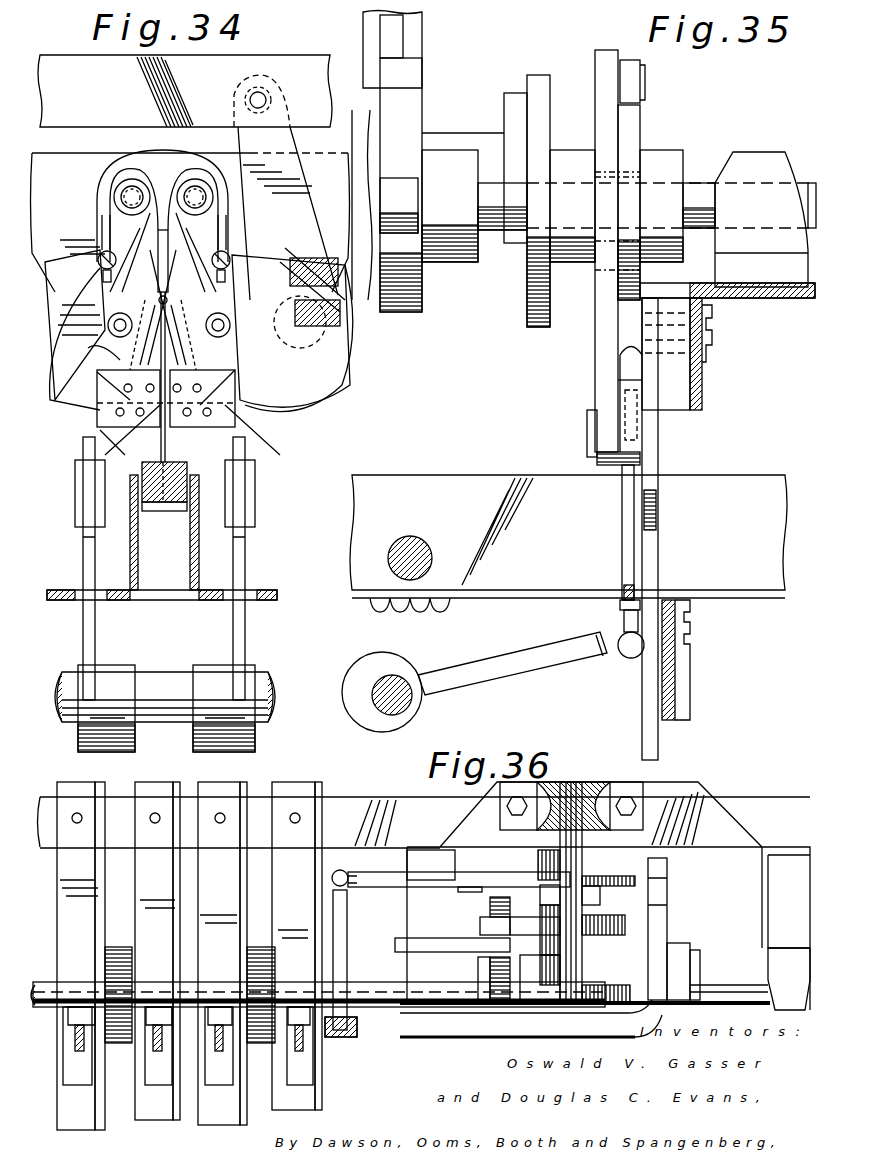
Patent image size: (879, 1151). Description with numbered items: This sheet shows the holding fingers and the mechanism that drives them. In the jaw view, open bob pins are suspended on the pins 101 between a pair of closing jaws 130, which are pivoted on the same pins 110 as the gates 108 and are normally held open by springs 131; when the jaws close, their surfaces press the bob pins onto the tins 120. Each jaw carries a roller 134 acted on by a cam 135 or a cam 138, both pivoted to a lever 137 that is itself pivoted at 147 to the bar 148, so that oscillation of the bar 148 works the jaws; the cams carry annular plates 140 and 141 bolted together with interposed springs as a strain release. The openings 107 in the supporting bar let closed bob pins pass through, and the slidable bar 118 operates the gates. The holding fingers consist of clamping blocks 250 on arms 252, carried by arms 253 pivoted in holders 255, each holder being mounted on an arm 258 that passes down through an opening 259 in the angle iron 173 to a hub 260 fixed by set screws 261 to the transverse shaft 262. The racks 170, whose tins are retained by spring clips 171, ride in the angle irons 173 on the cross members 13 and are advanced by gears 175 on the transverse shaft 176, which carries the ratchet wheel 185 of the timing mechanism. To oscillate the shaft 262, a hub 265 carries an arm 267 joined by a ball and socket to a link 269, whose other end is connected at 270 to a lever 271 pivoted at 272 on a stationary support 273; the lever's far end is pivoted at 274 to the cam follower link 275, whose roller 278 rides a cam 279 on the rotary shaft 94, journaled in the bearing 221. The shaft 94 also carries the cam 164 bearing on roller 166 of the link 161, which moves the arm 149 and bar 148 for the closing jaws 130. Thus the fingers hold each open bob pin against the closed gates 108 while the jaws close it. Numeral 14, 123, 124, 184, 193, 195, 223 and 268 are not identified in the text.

In FIG. 35, the cross members 13 is at (700, 608).
In FIG. 34, the needle 14 is at (167, 306).
In FIG. 35, the shaft 94 is at (695, 182).
In FIG. 36, the shaft 94 is at (582, 840).
In FIG. 34, the pins 101 is at (152, 295).
In FIG. 34, the spaced openings 107 is at (209, 269).
In FIG. 34, the gates 108 is at (241, 412).
In FIG. 34, the pins 110 is at (128, 180).
In FIG. 35, the slidable bar 118 is at (513, 100).
In FIG. 36, the slidable bar 118 is at (460, 952).
In FIG. 34, the tins 120 is at (166, 445).
In FIG. 36, the block 123 is at (480, 922).
In FIG. 35, the gear plate 124 is at (540, 82).
In FIG. 36, the gear plate 124 is at (600, 935).
In FIG. 34, the closing jaws 130 is at (118, 218).
In FIG. 34, the springs 131 is at (160, 152).
In FIG. 34, the roller 134 is at (164, 273).
In FIG. 34, the cam 135 is at (282, 278).
In FIG. 34, the lever 137 is at (291, 146).
In FIG. 34, the cam 138 is at (88, 412).
In FIG. 34, the annular plate 140 is at (272, 446).
In FIG. 34, the annular plate 141 is at (75, 325).
In FIG. 34, the pivot 147 is at (262, 92).
In FIG. 34, the bar 148 is at (228, 58).
In FIG. 35, the arm 149 is at (412, 38).
In FIG. 36, the link 161 is at (434, 1025).
In FIG. 35, the cam 164 is at (414, 82).
In FIG. 36, the cam 164 is at (605, 990).
In FIG. 35, the roller 166 is at (393, 188).
In FIG. 34, the racks 170 is at (183, 470).
In FIG. 34, the spring clips 171 is at (156, 506).
In FIG. 34, the angle irons 173 is at (190, 554).
In FIG. 35, the angle irons 173 is at (735, 490).
In FIG. 36, the angle irons 173 is at (132, 893).
In FIG. 35, the gears 175 is at (420, 608).
In FIG. 36, the gears 175 is at (116, 947).
In FIG. 35, the transverse shaft 176 is at (408, 546).
In FIG. 36, the transverse shaft 176 is at (205, 982).
In FIG. 36, the block 184 is at (786, 980).
In FIG. 36, the ratchet wheel 185 is at (512, 958).
In FIG. 36, the bar 193 is at (660, 884).
In FIG. 36, the block 195 is at (672, 950).
In FIG. 35, the bearing 221 is at (768, 162).
In FIG. 36, the bearing 221 is at (590, 790).
In FIG. 36, the plate 223 is at (455, 866).
In FIG. 34, the clamping blocks 250 is at (108, 325).
In FIG. 34, the arms 252 is at (97, 427).
In FIG. 34, the arms 253 is at (100, 440).
In FIG. 34, the holders 255 is at (75, 506).
In FIG. 34, the arm 258 is at (83, 543).
In FIG. 36, the arm 258 is at (75, 1040).
In FIG. 34, the opening 259 is at (72, 590).
In FIG. 36, the opening 259 is at (70, 1080).
In FIG. 34, the hub 260 is at (115, 686).
In FIG. 34, the set screws 261 is at (135, 732).
In FIG. 34, the transverse shaft 262 is at (168, 685).
In FIG. 35, the transverse shaft 262 is at (402, 678).
In FIG. 36, the transverse shaft 262 is at (45, 1008).
In FIG. 35, the hub 265 is at (366, 660).
In FIG. 36, the hub 265 is at (350, 1037).
In FIG. 35, the arm 267 is at (512, 688).
In FIG. 36, the arm 267 is at (347, 912).
In FIG. 35, the pivot 268 is at (622, 656).
In FIG. 35, the link 269 is at (622, 548).
In FIG. 35, the ball and socket connection 270 is at (618, 346).
In FIG. 36, the ball and socket connection 270 is at (340, 870).
In FIG. 35, the lever 271 is at (618, 380).
In FIG. 36, the lever 271 is at (392, 866).
In FIG. 35, the pivot 272 is at (625, 397).
In FIG. 36, the pivot 272 is at (466, 892).
In FIG. 35, the stationary support 273 is at (658, 456).
In FIG. 35, the pivot 274 is at (587, 435).
In FIG. 35, the cam follower link 275 is at (595, 322).
In FIG. 36, the cam follower link 275 is at (600, 893).
In FIG. 35, the roller 278 is at (640, 74).
In FIG. 36, the roller 278 is at (562, 872).
In FIG. 35, the cam 279 is at (632, 150).
In FIG. 36, the cam 279 is at (632, 876).